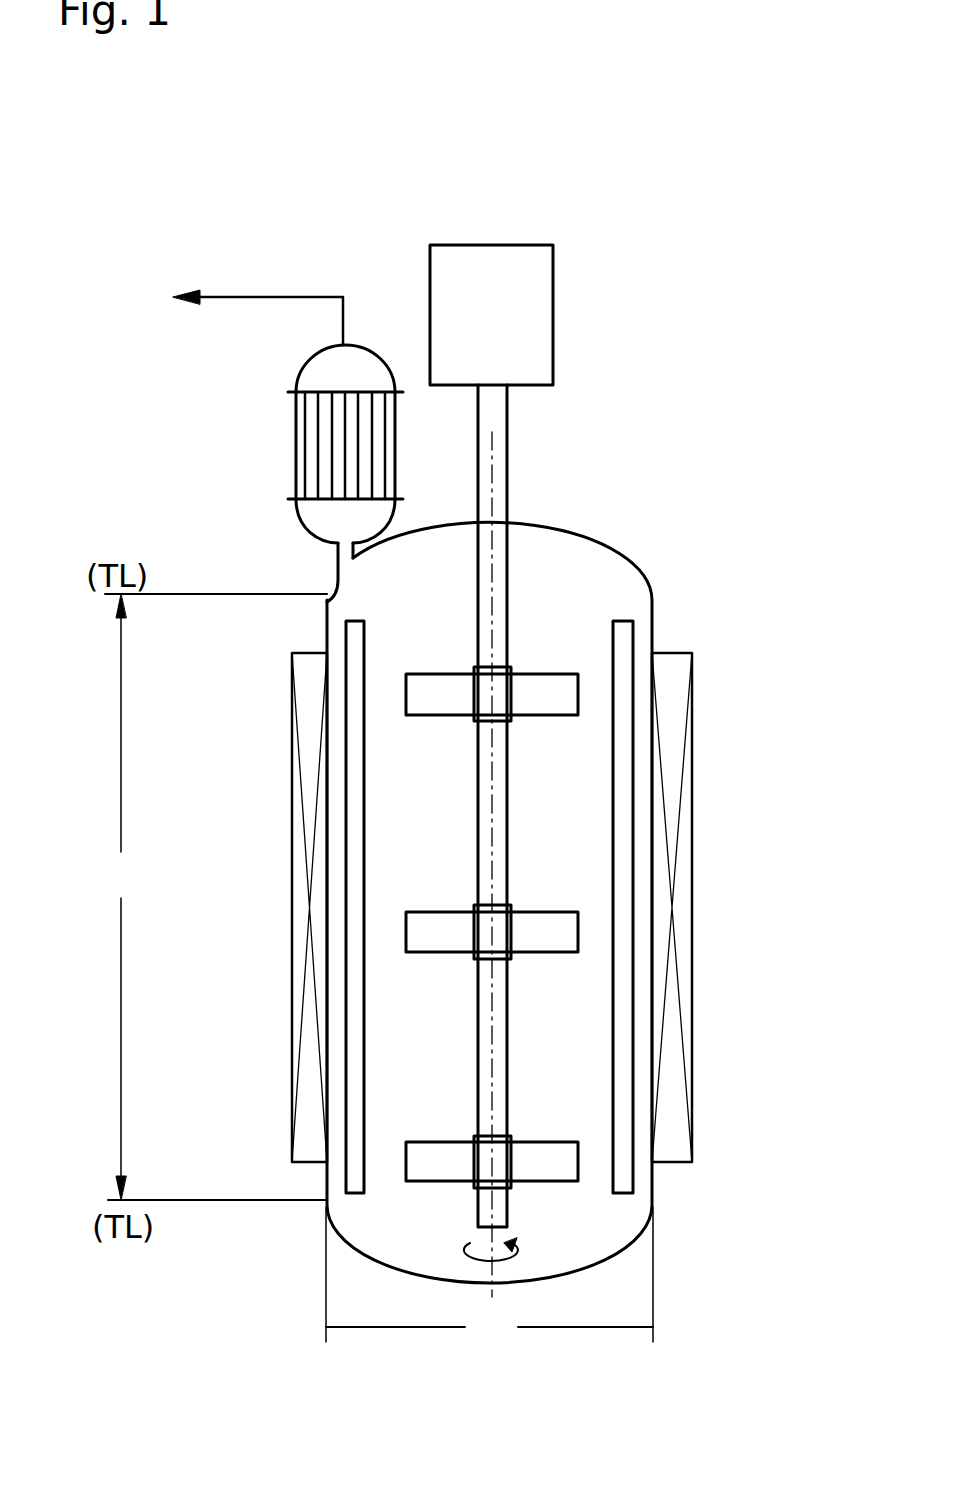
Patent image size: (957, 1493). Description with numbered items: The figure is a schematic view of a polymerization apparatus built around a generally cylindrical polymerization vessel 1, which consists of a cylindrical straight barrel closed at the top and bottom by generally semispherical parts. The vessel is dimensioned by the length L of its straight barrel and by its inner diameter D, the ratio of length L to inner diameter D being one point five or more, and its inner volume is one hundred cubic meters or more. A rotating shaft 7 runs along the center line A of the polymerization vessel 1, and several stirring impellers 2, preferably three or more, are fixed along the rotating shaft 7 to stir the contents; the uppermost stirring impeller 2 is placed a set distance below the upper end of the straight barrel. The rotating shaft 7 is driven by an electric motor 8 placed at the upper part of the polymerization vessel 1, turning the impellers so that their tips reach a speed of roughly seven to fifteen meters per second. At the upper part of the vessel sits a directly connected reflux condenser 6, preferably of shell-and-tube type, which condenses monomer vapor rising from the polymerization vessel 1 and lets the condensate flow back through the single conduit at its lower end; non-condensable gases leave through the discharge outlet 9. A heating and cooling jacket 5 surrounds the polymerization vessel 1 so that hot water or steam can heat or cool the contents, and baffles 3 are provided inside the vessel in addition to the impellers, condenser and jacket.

The polymerization vessel 1 is at (602, 542).
The stirring impeller 2 is at (552, 683).
The baffle 3 is at (625, 638).
The heating and cooling jacket 5 is at (682, 960).
The reflux condenser 6 is at (300, 448).
The rotating shaft 7 is at (508, 583).
The electric motor 8 is at (528, 331).
The discharge outlet for non-condensable gases 9 is at (268, 296).
The length of the straight barrel L is at (216, 897).
The inner diameter of the polymerization vessel D is at (489, 1277).
The center line of the polymerization vessel A is at (490, 1292).